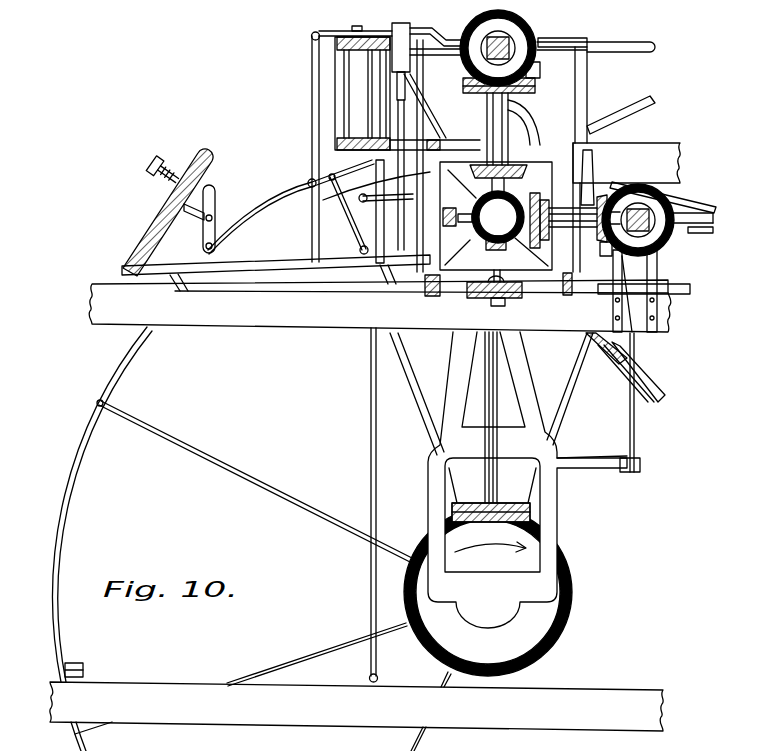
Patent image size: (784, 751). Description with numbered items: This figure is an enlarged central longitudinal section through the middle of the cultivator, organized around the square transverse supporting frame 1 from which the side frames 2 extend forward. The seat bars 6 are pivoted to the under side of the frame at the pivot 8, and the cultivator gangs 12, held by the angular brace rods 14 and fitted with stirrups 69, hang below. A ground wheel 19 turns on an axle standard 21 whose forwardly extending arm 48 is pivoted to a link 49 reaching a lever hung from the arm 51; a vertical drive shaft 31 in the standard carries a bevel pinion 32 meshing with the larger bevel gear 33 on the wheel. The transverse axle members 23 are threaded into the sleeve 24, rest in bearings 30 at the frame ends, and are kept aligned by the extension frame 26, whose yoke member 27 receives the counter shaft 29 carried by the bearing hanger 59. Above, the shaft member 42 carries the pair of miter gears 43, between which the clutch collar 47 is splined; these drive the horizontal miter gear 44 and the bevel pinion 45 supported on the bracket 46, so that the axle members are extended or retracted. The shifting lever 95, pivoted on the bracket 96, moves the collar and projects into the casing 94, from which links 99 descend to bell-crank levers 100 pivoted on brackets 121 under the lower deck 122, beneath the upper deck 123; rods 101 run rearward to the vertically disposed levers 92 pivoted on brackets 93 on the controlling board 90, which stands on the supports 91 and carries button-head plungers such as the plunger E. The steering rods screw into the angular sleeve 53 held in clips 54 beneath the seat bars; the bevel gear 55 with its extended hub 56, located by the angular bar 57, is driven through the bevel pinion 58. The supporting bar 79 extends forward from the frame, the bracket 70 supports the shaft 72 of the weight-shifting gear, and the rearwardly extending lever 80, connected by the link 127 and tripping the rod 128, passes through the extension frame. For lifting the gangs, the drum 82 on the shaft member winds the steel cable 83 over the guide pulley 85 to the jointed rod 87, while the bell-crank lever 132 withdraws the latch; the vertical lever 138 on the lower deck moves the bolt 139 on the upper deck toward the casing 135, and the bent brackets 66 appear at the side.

The transverse supporting frame 1 is at (430, 295).
The side frames 2 is at (672, 144).
The seat bars 6 is at (222, 326).
The pivot 8 is at (507, 303).
The cultivator gangs 12 is at (190, 682).
The brace rods 14 is at (622, 377).
The ground wheels 19 is at (80, 450).
The axle standards 21 is at (430, 463).
The transverse axle members 23 is at (498, 217).
The sleeve 24 is at (478, 232).
The extension frame 26 is at (468, 205).
The yoke member 27 is at (542, 191).
The counter shaft 29 is at (549, 236).
The bearings 30 is at (492, 250).
The vertical drive shaft 31 is at (498, 366).
The bevel pinion 32 is at (532, 511).
The bevel gear 33 is at (568, 558).
The shaft member 42 is at (538, 69).
The miter gears 43 is at (478, 26).
The miter gear 44 is at (534, 92).
The bevel pinion 45 is at (510, 166).
The bracket 46 is at (487, 126).
The clutch collar 47 is at (540, 44).
The arms 48 is at (592, 456).
The link 49 is at (636, 436).
The arm 51 is at (618, 342).
The sleeve 53 is at (650, 220).
The clips 54 is at (660, 270).
The bevel gear 55 is at (690, 189).
The hub 56 is at (606, 251).
The angular bar 57 is at (626, 190).
The bevel pinion 58 is at (600, 236).
The bearing hanger 59 is at (589, 180).
The brackets 66 is at (660, 393).
The stirrups 69 is at (84, 668).
The bracket 70 is at (640, 100).
The shaft 72 is at (633, 42).
The supporting bar 79 is at (690, 289).
The lever 80 is at (714, 231).
The drum 82 is at (540, 30).
The steel cable 83 is at (430, 58).
The guide pulley 85 is at (400, 132).
The jointed rod 87 is at (371, 560).
The controlling board 90 is at (160, 218).
The supports 91 is at (247, 282).
The levers 92 is at (214, 186).
The bracket 93 is at (195, 216).
The casing 94 is at (405, 36).
The shifting lever 95 is at (436, 25).
The bracket 96 is at (424, 101).
The link 99 is at (397, 88).
The bell-crank lever 100 is at (360, 225).
The rod 101 is at (270, 262).
The brackets 121 is at (357, 173).
The lower deck 122 is at (362, 142).
The upper deck 123 is at (368, 52).
The link 127 is at (358, 199).
The rod 128 is at (384, 245).
The bell-crank lever 132 is at (346, 128).
The casing 135 is at (374, 30).
The vertical lever 138 is at (335, 78).
The bolt 139 is at (348, 30).
The plunger E is at (162, 160).